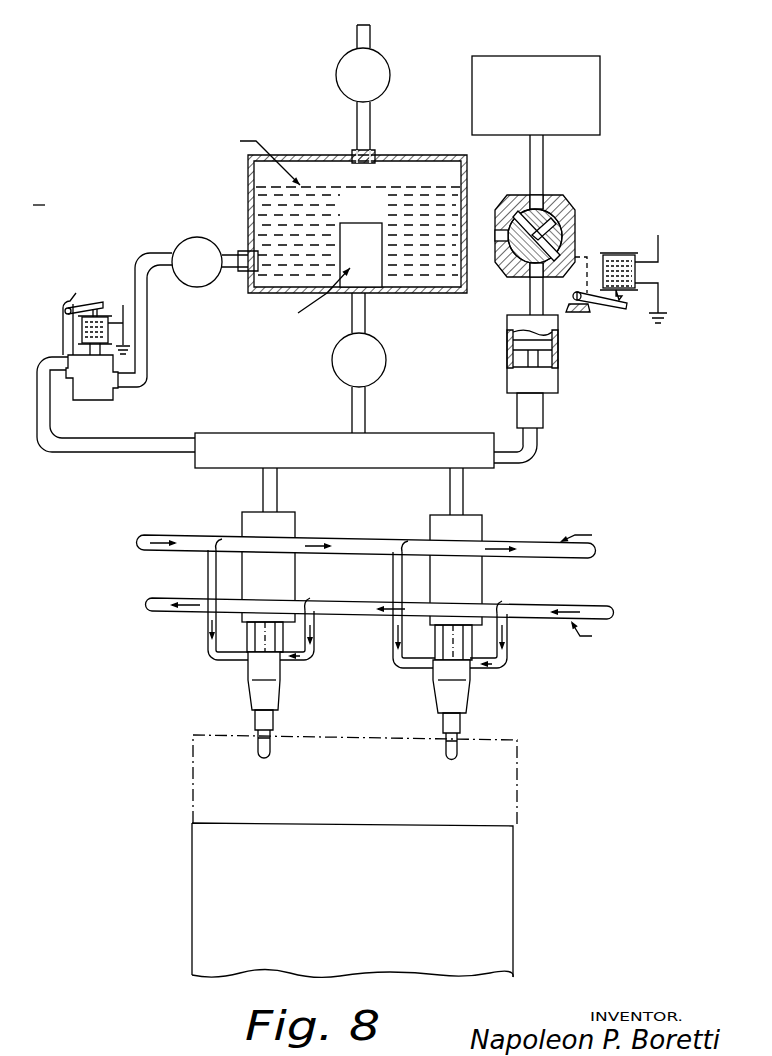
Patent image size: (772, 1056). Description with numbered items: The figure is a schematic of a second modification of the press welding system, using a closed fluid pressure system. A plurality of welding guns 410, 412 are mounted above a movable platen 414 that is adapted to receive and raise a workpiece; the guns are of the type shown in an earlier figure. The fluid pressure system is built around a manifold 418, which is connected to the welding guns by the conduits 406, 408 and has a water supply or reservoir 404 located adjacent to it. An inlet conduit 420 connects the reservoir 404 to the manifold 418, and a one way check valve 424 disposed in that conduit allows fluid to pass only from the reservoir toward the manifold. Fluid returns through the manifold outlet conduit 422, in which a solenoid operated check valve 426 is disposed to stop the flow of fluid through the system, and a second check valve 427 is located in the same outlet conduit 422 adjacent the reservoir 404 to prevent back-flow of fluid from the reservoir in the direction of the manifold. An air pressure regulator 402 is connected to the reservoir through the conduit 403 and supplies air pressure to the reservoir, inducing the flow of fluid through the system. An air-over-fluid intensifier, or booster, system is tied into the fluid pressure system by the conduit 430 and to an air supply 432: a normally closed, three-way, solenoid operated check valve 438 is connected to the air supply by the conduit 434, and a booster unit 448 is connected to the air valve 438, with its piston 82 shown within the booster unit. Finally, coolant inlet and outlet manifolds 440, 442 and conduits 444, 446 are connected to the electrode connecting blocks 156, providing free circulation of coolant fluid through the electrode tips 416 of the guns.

The air pressure regulator 402 is at (347, 60).
The conduit 403 is at (357, 120).
The water supply or reservoir 404 is at (412, 165).
The second check valve 427 is at (199, 237).
The solenoid operated check valve 426 is at (108, 392).
The manifold outlet conduit 422 is at (60, 458).
The inlet conduit 420 is at (366, 318).
The one way check valve 424 is at (385, 362).
The manifold 418 is at (263, 433).
The conduit 406 is at (266, 489).
The welding gun 410 is at (240, 526).
The conduit 408 is at (464, 491).
The welding gun 412 is at (428, 532).
The coolant inlet manifold 440 is at (178, 556).
The coolant outlet manifold 442 is at (180, 616).
The conduit 446 is at (208, 638).
The conduit 444 is at (310, 668).
The electrode connecting block 156 is at (250, 698).
The electrode tip 416 is at (262, 752).
The movable platen 414 is at (190, 884).
The air supply 432 is at (590, 66).
The three-way solenoid operated check valve 438 is at (510, 268).
The conduit 434 is at (537, 318).
The booster unit 448 is at (545, 378).
The piston 82 is at (515, 343).
The conduit 430 is at (535, 447).